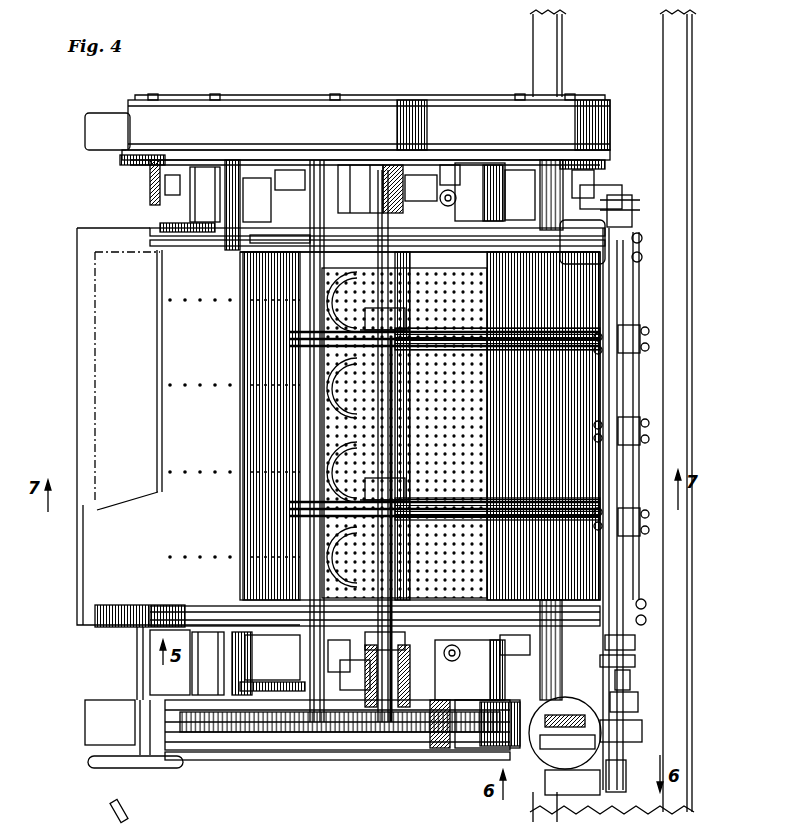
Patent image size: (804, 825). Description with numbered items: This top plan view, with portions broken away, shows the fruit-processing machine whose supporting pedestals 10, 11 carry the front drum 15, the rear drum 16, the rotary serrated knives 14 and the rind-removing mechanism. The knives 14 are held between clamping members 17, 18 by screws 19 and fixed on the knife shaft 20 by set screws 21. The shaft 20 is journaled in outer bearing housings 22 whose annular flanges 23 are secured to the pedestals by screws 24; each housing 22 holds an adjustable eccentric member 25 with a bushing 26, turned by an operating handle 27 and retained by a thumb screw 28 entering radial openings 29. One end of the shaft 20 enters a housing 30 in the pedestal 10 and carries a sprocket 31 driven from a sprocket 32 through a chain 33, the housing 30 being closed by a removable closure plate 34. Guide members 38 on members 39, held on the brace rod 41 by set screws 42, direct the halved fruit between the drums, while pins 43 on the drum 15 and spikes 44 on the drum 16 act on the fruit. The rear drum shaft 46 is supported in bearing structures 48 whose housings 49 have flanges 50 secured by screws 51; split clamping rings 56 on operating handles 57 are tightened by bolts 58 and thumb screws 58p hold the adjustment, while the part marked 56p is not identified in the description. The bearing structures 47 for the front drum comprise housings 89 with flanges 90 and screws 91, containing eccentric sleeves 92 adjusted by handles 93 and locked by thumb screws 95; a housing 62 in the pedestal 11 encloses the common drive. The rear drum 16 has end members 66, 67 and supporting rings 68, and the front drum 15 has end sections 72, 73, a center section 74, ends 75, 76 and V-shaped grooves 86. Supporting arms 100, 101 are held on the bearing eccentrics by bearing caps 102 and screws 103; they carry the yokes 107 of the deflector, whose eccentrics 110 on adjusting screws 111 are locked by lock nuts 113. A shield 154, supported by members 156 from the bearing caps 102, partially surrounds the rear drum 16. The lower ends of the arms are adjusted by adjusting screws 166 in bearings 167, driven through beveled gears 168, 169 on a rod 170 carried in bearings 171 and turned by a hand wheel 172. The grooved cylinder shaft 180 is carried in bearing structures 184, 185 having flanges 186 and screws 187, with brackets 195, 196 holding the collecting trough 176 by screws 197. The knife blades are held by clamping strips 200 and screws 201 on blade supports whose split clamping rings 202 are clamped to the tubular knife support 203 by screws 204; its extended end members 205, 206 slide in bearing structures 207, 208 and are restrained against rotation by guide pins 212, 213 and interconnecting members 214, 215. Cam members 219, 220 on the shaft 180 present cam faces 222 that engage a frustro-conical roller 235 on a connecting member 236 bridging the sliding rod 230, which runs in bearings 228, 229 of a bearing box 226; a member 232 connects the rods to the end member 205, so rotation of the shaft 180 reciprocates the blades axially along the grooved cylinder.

The supporting pedestal 10 is at (245, 760).
The supporting pedestal 11 is at (305, 115).
The rotary serrated knives 14 is at (475, 330).
The front drum 15 is at (600, 397).
The rear drum 16 is at (180, 410).
The clamping member 17 is at (410, 380).
The clamping member 18 is at (398, 318).
The screws 19 is at (395, 380).
The revoluble shaft 20 is at (378, 430).
The set screws 21 is at (192, 500).
The outer bearing housings 22 is at (345, 720).
The exterior annular flanges 23 is at (385, 160).
The screws 24 is at (368, 170).
The adjustable eccentric members 25 is at (365, 720).
The bushings 26 is at (400, 720).
The operating handles 27 is at (452, 645).
The thumb screws 28 is at (340, 168).
The radially disposed openings 29 is at (419, 665).
The housing 30 is at (440, 750).
The sprocket 31 is at (415, 720).
The sprocket 32 is at (215, 740).
The chain 33 is at (385, 720).
The removable closure plate 34 is at (280, 760).
The guide members 38 is at (345, 360).
The members 39 is at (320, 300).
The rod 41 is at (248, 385).
The set screws 42 is at (295, 300).
The pins 43 is at (455, 395).
The spikes 44 is at (215, 383).
The shaft 46 is at (210, 610).
The bearing structures 47 is at (490, 670).
The bearing structures 48 is at (250, 192).
The bearing housings 49 is at (207, 425).
The exterior annular flanges 50 is at (200, 157).
The screws 51 is at (215, 170).
The split clamping rings 56 is at (195, 245).
The bracket prime 56p is at (175, 192).
The operating handles 57 is at (265, 250).
The bolts 58 is at (175, 240).
The thumb screws 58p is at (150, 655).
The housing 62 is at (250, 104).
The end member 66 is at (85, 597).
The end member 67 is at (160, 270).
The supporting rings 68 is at (160, 178).
The cylindrical end section 72 is at (570, 580).
The cylindrical end section 73 is at (595, 292).
The cylindrical center section 74 is at (580, 450).
The drum end 75 is at (610, 600).
The drum end 76 is at (548, 215).
The V-shaped grooves 86 is at (590, 500).
The outer housings 89 is at (460, 655).
The flanges 90 is at (455, 170).
The screws 91 is at (495, 168).
The eccentric sleeves 92 is at (440, 242).
The operating handles 93 is at (510, 612).
The thumb screws 95 is at (485, 670).
The supporting arm 100 is at (290, 645).
The supporting arm 101 is at (262, 180).
The bearing caps 102 is at (200, 225).
The screws 103 is at (190, 610).
The yokes 107 is at (415, 431).
The eccentrics 110 is at (315, 244).
The adjusting screws 111 is at (305, 432).
The lock nuts 113 is at (290, 190).
The shield 154 is at (95, 348).
The members 156 is at (160, 235).
The adjusting screws 166 is at (275, 158).
The bearings 167 is at (450, 160).
The beveled gears 168 is at (160, 688).
The beveled gears 169 is at (125, 158).
The rod 170 is at (150, 207).
The bearings 171 is at (140, 730).
The hand wheel 172 is at (170, 762).
The collecting trough 176 is at (620, 278).
The shaft 180 is at (552, 700).
The bearing structure 184 is at (622, 695).
The bearing structure 185 is at (552, 170).
The exterior flanges 186 is at (595, 160).
The screws 187 is at (585, 170).
The bracket 195 is at (560, 647).
The bracket 196 is at (580, 200).
The screws 197 is at (590, 428).
The clamping strips 200 is at (612, 312).
The screws 201 is at (632, 355).
The split clamping rings 202 is at (632, 330).
The tubular knife support 203 is at (605, 290).
The screws 204 is at (642, 339).
The extended end member 205 is at (630, 680).
The extended end member 206 is at (632, 222).
The bearing structure 207 is at (636, 642).
The bearing structure 208 is at (632, 200).
The guide pin 212 is at (636, 660).
The guide pin 213 is at (600, 190).
The interconnecting member 214 is at (646, 620).
The interconnecting member 215 is at (642, 238).
The cam member 219 is at (565, 770).
The cam member 220 is at (535, 710).
The cam faces 222 is at (530, 760).
The bearing box 226 is at (642, 730).
The bearings 228 is at (626, 780).
The bearings 229 is at (640, 722).
The sliding rod 230 is at (615, 795).
The member 232 is at (638, 702).
The frustro-conical roller 235 is at (642, 742).
The connecting member 236 is at (626, 765).